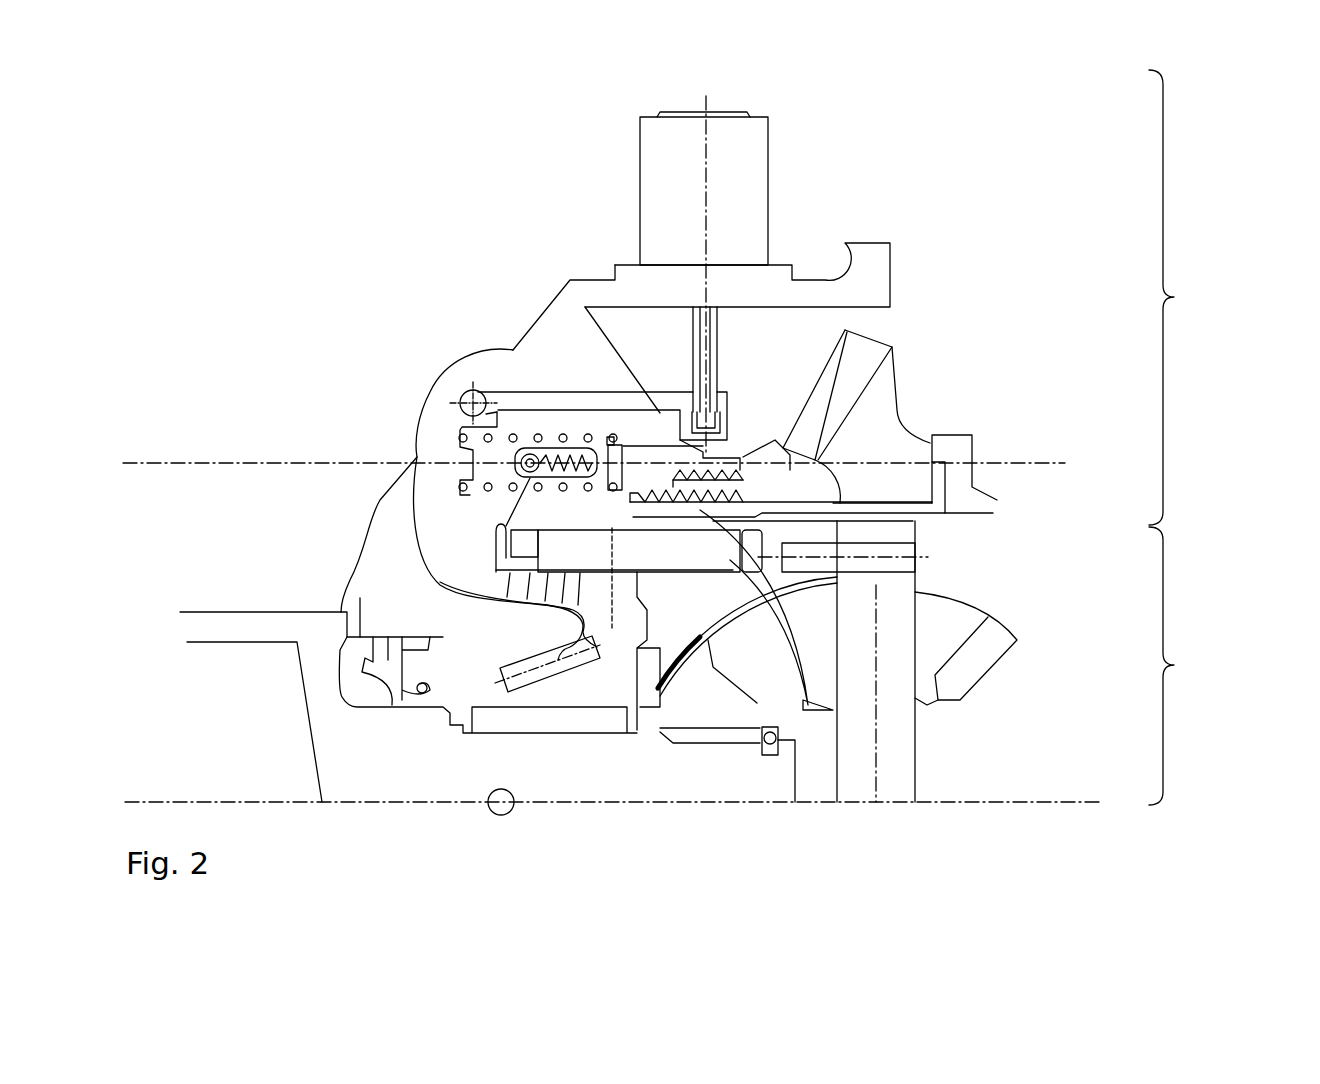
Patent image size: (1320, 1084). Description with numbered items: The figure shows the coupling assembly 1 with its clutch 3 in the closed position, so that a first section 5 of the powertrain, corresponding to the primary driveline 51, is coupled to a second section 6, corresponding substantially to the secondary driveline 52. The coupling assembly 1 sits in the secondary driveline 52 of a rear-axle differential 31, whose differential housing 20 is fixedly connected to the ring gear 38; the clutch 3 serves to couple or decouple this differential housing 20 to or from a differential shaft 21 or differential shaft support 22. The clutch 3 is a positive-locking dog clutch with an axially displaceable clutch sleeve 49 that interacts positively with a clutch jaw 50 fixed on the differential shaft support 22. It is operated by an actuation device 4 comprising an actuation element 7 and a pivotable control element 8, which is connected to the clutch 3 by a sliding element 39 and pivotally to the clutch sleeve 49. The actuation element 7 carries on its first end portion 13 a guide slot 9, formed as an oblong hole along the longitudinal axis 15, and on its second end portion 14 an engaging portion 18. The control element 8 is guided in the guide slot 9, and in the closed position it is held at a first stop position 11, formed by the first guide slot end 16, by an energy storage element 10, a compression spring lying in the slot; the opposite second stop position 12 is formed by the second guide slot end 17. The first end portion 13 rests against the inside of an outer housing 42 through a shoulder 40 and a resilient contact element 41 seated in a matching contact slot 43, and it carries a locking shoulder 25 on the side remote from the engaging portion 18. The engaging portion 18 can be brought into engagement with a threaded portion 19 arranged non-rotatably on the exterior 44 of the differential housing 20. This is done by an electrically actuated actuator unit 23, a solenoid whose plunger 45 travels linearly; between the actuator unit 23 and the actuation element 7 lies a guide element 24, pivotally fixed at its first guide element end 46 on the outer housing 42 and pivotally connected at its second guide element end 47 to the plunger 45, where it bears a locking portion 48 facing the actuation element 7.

The coupling assembly 1 is at (340, 128).
The rear-axle differential 31 is at (418, 190).
The clutch 3 is at (537, 488).
The actuation device 4 is at (437, 560).
The first section of the powertrain 5 is at (1215, 297).
The second section of the powertrain 6 is at (1174, 665).
The actuation element 7 is at (603, 437).
The control element 8 is at (522, 478).
The guide slot 9 is at (697, 708).
The energy storage element 10 is at (388, 451).
The first stop position 11 is at (359, 421).
The second stop position 12 is at (673, 678).
The first end portion 13 is at (557, 486).
The second end portion 14 is at (793, 310).
The longitudinal axis 15 is at (1005, 462).
The first guide slot end 16 is at (518, 458).
The second guide slot end 17 is at (618, 481).
The engaging portion 18 is at (745, 457).
The threaded portion 19 is at (837, 670).
The differential housing 20 is at (832, 508).
The differential shaft 21 is at (897, 622).
The differential shaft support 22 is at (787, 580).
The actuator unit 23 is at (785, 222).
The guide element 24 is at (563, 403).
The locking shoulder 25 is at (707, 443).
The ring gear 38 is at (875, 402).
The sliding element 39 is at (503, 810).
The shoulder 40 is at (625, 481).
The contact element 41 is at (468, 395).
The outer housing 42 is at (403, 590).
The contact slot 43 is at (455, 465).
The exterior 44 is at (833, 462).
The plunger 45 is at (708, 348).
The first guide element end 46 is at (460, 401).
The second guide element end 47 is at (722, 396).
The locking portion 48 is at (677, 417).
The clutch sleeve 49 is at (578, 580).
The clutch jaw 50 is at (752, 553).
The primary driveline 51 is at (1174, 297).
The secondary driveline 52 is at (1215, 437).